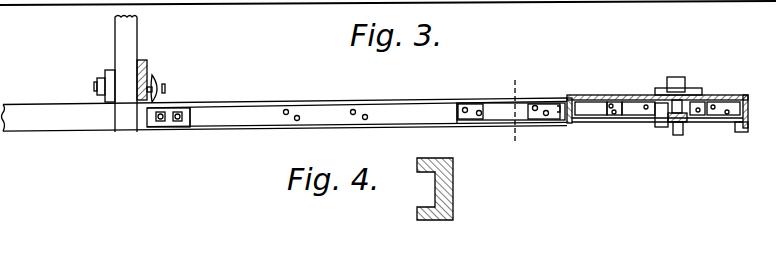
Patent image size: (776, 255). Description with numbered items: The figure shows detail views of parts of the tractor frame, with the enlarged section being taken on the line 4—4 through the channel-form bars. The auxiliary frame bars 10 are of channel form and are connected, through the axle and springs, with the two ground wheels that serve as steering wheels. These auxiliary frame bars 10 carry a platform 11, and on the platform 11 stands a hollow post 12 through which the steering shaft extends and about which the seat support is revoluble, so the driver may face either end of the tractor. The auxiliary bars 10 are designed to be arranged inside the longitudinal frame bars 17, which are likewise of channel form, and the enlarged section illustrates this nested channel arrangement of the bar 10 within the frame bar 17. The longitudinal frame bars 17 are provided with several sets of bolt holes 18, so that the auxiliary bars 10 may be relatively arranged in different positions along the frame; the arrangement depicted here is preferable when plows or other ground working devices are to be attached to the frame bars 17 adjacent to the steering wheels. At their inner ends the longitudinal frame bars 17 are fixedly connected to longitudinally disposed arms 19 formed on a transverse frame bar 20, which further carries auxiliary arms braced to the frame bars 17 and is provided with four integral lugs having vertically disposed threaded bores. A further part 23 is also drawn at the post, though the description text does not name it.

In FIG. 3, the section line 4— 4 is at (513, 112).
In FIG. 3, the auxiliary frame bars 10 is at (525, 113).
In FIG. 4, the auxiliary frame bars 10 is at (435, 185).
In FIG. 3, the platform 11 is at (615, 98).
In FIG. 3, the hollow post 12 is at (677, 78).
In FIG. 3, the longitudinal frame bars 17 is at (410, 115).
In FIG. 4, the longitudinal frame bars 17 is at (453, 178).
In FIG. 3, the bolt holes 18 is at (364, 114).
In FIG. 3, the longitudinally disposed arms 19 is at (170, 126).
In FIG. 3, the transverse frame bar 20 is at (160, 86).
In FIG. 3, the clamping block 23 is at (147, 63).